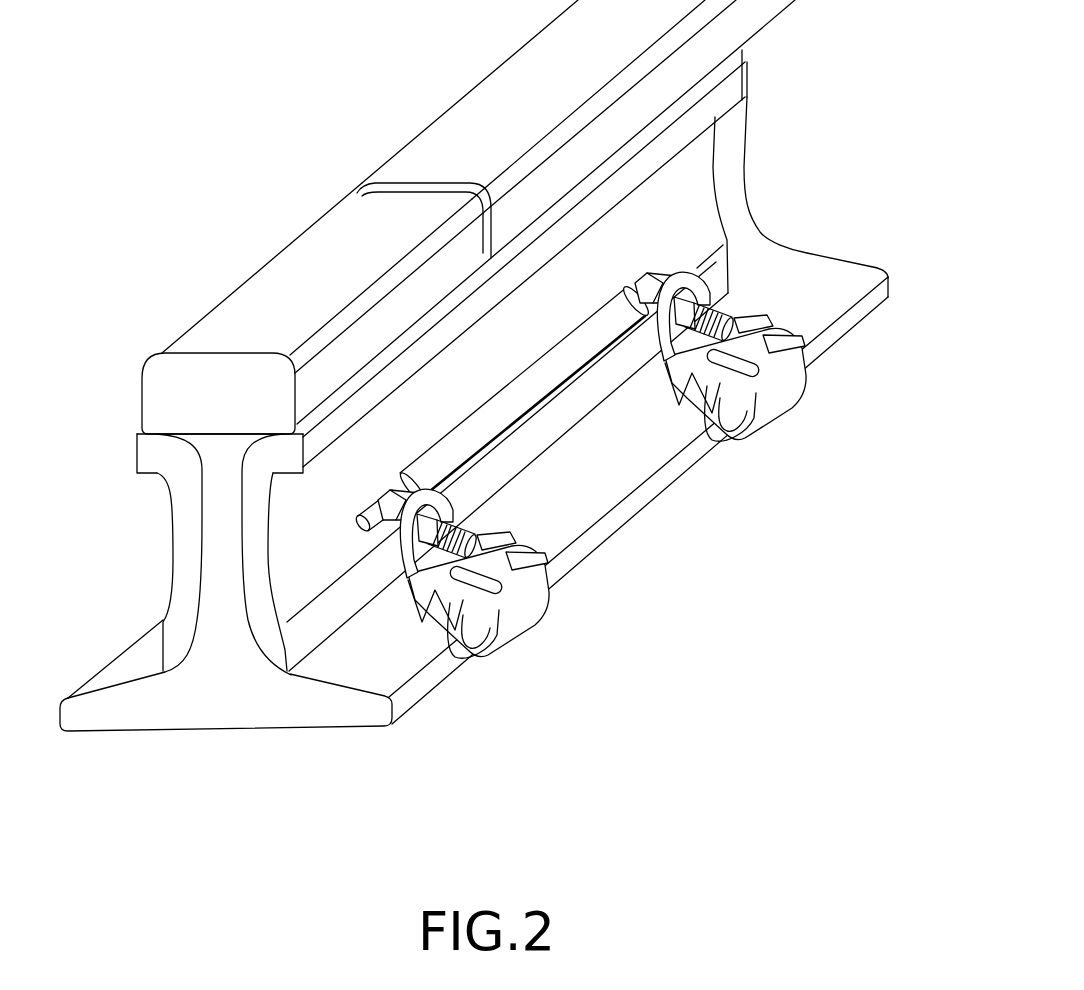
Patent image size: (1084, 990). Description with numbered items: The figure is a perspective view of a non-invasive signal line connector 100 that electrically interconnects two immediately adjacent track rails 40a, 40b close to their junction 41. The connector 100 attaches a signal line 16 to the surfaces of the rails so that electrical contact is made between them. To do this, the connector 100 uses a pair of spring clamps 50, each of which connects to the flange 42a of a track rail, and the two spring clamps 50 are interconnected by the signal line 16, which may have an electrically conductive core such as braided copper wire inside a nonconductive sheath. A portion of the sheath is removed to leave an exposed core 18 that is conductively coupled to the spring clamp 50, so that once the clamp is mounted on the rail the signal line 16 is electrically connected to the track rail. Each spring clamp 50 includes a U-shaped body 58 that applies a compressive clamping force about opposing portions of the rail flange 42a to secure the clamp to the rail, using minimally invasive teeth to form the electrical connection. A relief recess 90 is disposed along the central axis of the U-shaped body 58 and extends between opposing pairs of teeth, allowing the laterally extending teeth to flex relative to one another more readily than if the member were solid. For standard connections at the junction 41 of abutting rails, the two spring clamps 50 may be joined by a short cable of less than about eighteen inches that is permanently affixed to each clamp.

The junction 41 is at (466, 236).
The track rail 40a is at (310, 255).
The track rail 40b is at (437, 160).
The flange 42a is at (345, 715).
The relief recess 90 is at (268, 643).
The signal line connector 100 is at (621, 479).
The signal line 16 is at (537, 405).
The exposed core 18 is at (642, 267).
The spring clamp 50 is at (621, 479).
The U-shaped body 58 is at (447, 640).